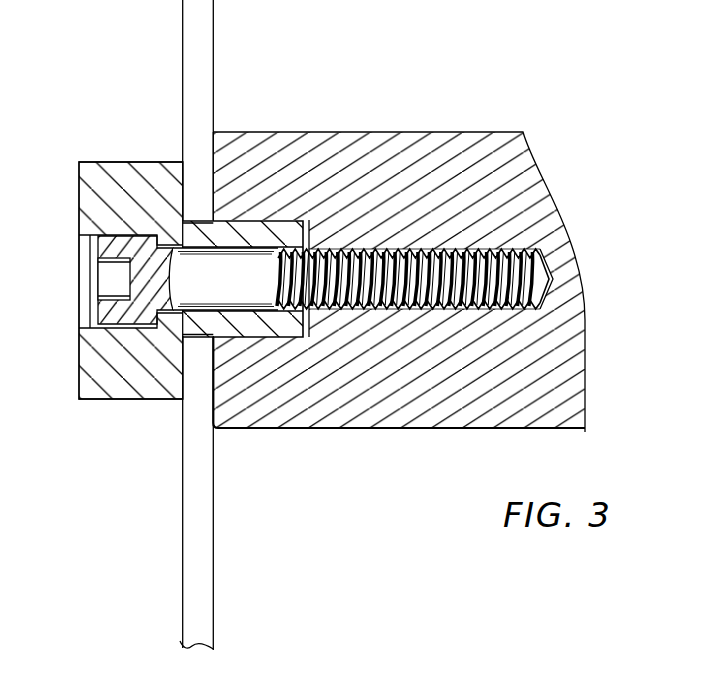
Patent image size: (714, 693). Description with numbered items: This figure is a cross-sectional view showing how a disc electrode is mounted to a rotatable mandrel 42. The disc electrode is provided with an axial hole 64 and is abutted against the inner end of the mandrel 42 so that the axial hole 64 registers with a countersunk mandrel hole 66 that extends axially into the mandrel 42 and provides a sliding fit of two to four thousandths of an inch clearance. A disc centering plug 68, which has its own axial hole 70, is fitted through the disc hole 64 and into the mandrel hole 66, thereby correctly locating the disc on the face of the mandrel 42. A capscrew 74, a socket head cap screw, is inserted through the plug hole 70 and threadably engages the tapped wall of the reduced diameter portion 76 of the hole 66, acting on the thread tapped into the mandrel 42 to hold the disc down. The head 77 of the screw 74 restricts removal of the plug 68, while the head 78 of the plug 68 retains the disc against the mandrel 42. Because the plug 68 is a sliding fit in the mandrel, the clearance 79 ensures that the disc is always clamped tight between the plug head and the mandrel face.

The mandrel 42 is at (470, 131).
The axial hole 64 is at (193, 328).
The countersunk mandrel hole 66 is at (252, 215).
The disc centering plug 68 is at (78, 398).
The axial hole 70 is at (90, 245).
The capscrew 74 is at (550, 270).
The reduced diameter portion 76 is at (420, 308).
The head 77 is at (110, 315).
The head 78 is at (141, 173).
The clearance 79 is at (310, 338).